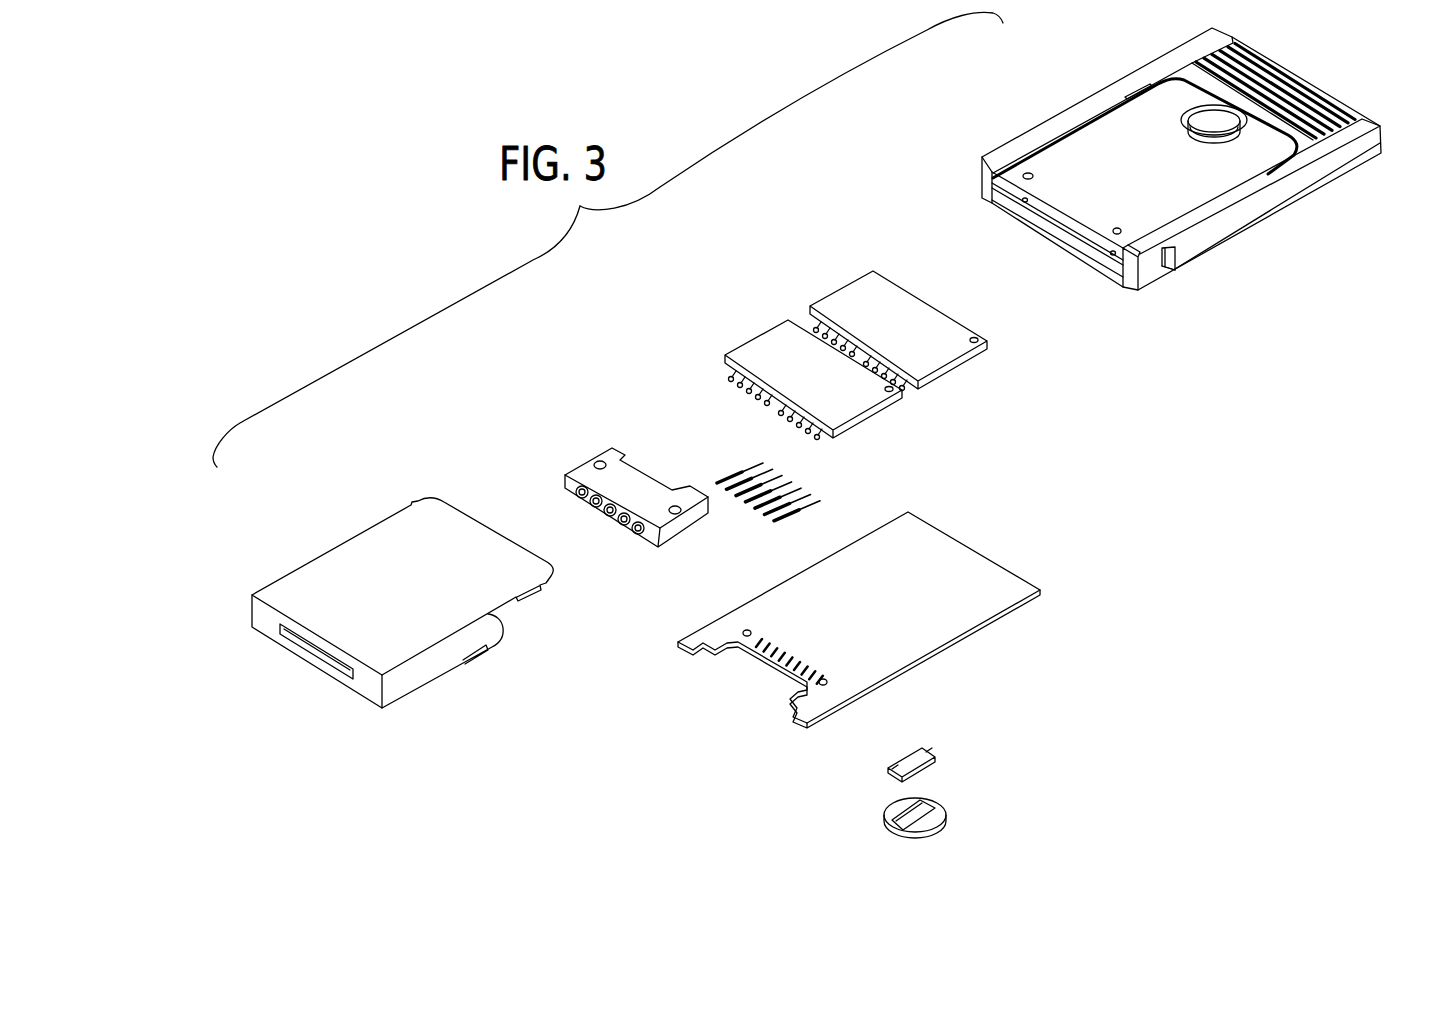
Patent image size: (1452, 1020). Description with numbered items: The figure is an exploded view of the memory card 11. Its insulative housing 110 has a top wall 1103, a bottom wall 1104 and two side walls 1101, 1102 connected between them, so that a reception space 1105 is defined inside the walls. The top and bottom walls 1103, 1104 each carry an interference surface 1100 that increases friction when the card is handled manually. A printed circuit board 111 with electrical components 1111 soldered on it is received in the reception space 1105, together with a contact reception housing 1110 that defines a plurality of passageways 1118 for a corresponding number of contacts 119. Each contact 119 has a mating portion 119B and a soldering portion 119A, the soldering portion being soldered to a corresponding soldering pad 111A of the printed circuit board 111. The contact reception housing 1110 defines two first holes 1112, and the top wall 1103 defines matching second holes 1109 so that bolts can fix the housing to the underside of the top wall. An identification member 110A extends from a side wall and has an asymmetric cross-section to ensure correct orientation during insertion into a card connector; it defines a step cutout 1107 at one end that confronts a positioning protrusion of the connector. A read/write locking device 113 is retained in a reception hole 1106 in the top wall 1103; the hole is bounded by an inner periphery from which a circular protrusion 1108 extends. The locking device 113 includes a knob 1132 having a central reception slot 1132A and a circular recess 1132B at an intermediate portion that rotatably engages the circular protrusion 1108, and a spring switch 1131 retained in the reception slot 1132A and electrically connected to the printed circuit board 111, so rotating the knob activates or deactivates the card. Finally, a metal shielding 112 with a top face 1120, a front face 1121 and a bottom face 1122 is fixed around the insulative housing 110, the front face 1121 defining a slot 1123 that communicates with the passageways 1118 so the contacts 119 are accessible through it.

The memory card 11 is at (1110, 445).
The insulative housing 110 is at (1332, 203).
The interference surface 1100 is at (1327, 120).
The side wall 1101 is at (1243, 205).
The side wall 1102 is at (1048, 127).
The top wall 1103 is at (1098, 125).
The bottom wall 1104 is at (1217, 247).
The reception space 1105 is at (1027, 202).
The reception hole 1106 is at (1212, 143).
The step cutout 1107 is at (1147, 273).
The circular protrusion 1108 is at (1190, 112).
The second holes 1109 is at (1117, 232).
The identification member 110A is at (1175, 269).
The printed circuit board 111 is at (1022, 657).
The soldering pad 111A is at (748, 648).
The contact reception housing 1110 is at (580, 473).
The electrical components 1111 is at (838, 242).
The first holes 1112 is at (672, 505).
The passageways 1118 is at (632, 528).
The contacts 119 is at (812, 508).
The soldering portion 119A is at (818, 498).
The mating portion 119B is at (780, 522).
The metal shielding 112 is at (242, 570).
The top face 1120 is at (357, 558).
The front face 1121 is at (265, 625).
The bottom face 1122 is at (410, 680).
The slot 1123 is at (318, 647).
The read/write locking device 113 is at (970, 792).
The spring switch 1131 is at (905, 758).
The knob 1132 is at (888, 812).
The reception slot 1132A is at (893, 823).
The circular recess 1132B is at (925, 840).